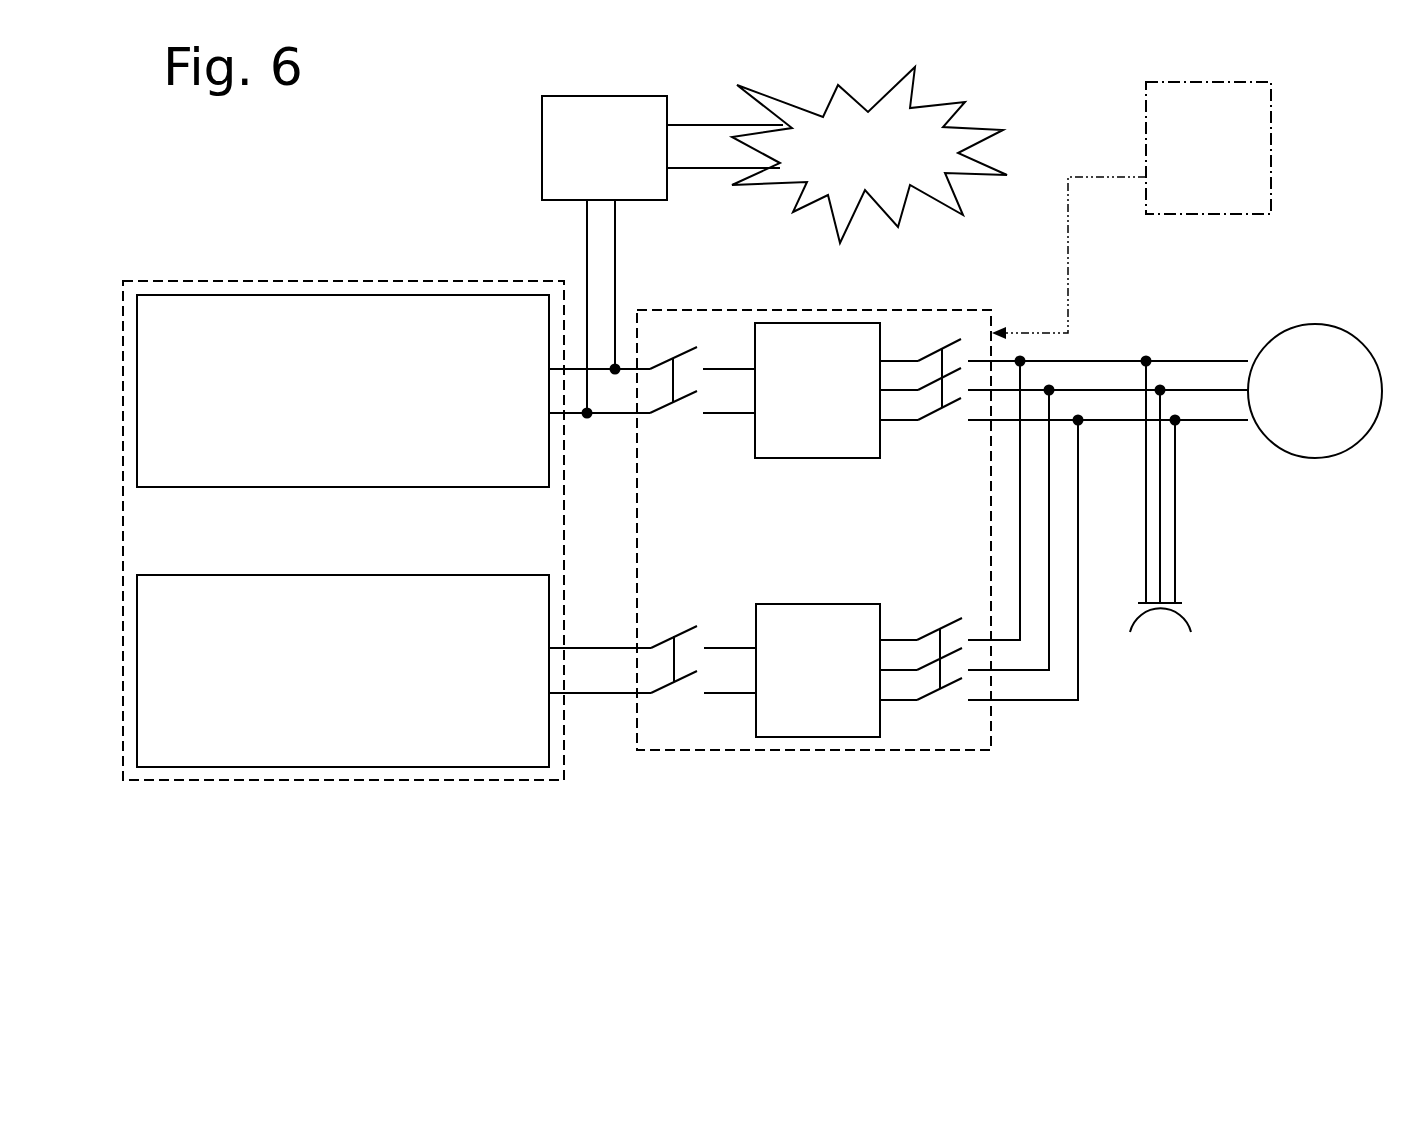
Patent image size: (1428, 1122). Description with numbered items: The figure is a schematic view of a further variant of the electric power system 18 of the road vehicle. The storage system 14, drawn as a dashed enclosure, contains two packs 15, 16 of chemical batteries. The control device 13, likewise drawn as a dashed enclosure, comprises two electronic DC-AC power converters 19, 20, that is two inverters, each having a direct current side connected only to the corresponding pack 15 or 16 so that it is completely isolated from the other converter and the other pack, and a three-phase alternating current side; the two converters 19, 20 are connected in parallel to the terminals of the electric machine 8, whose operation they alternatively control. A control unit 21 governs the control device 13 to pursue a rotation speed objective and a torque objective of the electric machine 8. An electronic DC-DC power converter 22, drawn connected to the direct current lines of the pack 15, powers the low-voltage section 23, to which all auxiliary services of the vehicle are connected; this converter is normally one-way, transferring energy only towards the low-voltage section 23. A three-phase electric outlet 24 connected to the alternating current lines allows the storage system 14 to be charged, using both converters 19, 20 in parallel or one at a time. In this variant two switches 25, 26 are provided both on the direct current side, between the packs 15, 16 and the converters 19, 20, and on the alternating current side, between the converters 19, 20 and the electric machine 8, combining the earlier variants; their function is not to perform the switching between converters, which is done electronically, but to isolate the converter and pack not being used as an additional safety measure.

The electric machine 8 is at (1315, 391).
The control device 13 is at (940, 752).
The storage system 14 is at (357, 825).
The pack of chemical batteries 15 is at (343, 391).
The pack of chemical batteries 16 is at (343, 671).
The electric power system 18 is at (1243, 848).
The electronic DC-AC power converter 19 is at (822, 353).
The electronic DC-AC power converter 20 is at (813, 708).
The control unit 21 is at (1131, 210).
The electronic DC-DC power converter 22 is at (608, 125).
The low-voltage section 23 is at (837, 155).
The electric outlet 24 is at (1135, 622).
The switch 25 is at (674, 424).
The switch 26 is at (938, 609).